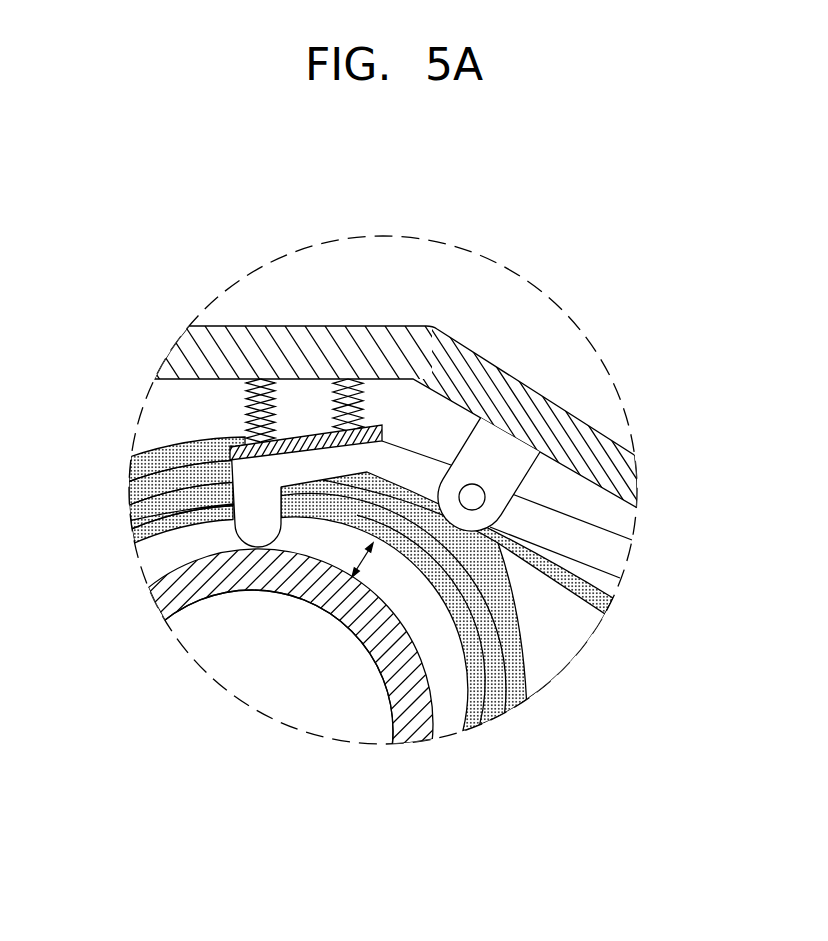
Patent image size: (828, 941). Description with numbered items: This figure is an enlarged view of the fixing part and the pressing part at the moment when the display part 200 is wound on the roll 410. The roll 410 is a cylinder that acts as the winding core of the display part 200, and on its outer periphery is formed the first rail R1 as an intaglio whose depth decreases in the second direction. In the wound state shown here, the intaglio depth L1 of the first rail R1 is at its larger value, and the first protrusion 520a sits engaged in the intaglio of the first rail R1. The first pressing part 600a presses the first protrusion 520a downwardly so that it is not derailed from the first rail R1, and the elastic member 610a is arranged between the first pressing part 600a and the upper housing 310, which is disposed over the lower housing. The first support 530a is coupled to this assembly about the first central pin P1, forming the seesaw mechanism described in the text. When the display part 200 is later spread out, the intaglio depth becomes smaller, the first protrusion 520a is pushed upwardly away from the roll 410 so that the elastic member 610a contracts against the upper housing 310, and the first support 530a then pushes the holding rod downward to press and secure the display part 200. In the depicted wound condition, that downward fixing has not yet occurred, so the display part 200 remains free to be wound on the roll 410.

The display part 200 is at (160, 456).
The upper housing 310 is at (443, 347).
The roll 410 is at (162, 603).
The first protrusion 520a is at (128, 523).
The first support 530a is at (610, 554).
The first pressing part 600a is at (303, 437).
The elastic member 610a is at (350, 387).
The first central pin P1 is at (473, 490).
The intaglio depth L1 is at (369, 563).
The first rail R1 is at (430, 692).